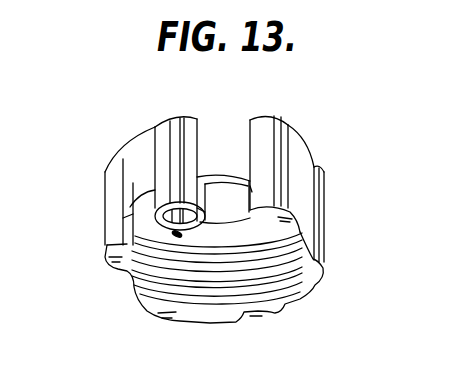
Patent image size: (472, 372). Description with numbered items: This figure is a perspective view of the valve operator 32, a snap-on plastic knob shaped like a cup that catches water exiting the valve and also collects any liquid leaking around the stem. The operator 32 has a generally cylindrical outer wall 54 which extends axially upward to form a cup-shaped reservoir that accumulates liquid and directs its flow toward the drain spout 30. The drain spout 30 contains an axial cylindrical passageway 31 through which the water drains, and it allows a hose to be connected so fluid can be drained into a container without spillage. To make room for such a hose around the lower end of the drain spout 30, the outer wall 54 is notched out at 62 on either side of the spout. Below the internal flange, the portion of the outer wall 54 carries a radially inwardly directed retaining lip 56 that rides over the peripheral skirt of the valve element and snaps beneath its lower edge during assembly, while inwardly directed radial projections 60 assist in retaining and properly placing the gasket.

The valve operator 32 is at (193, 108).
The drain spout 30 is at (238, 213).
The axial cylindrical passageway 31 is at (186, 212).
The notch 62 is at (125, 227).
The inwardly directed radial projection 60 is at (176, 237).
The retaining lip 56 is at (207, 294).
The cylindrical outer wall 54 is at (304, 279).